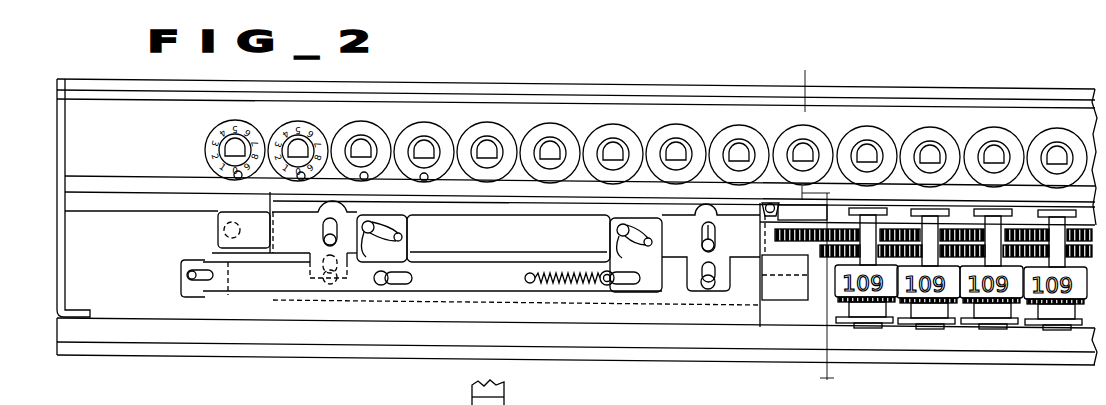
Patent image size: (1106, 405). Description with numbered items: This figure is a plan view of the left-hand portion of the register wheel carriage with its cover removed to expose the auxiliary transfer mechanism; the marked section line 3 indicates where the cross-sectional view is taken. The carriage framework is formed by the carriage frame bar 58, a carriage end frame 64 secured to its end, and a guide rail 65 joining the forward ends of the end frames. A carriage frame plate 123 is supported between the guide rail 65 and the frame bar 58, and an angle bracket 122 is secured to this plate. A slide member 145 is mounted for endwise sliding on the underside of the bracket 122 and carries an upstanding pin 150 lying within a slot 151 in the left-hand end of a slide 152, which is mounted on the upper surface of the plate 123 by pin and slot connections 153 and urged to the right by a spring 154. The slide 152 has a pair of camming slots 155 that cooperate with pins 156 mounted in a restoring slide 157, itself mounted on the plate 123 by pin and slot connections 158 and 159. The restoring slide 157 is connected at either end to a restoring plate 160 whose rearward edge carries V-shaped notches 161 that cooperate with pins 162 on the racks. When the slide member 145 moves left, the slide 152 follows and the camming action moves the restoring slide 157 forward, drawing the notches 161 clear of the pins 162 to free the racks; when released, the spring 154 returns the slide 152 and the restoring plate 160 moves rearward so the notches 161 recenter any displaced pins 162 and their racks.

The carriage frame bar 58 is at (116, 72).
The carriage end frame 64 is at (70, 150).
The guide rail 65 is at (327, 338).
The angle bracket 122 is at (771, 293).
The carriage frame plate 123 is at (555, 313).
The slide member 145 is at (192, 260).
The upstanding pin 150 is at (188, 275).
The slot 151 is at (198, 280).
The slide 152 is at (472, 291).
The pin and slot connections 153 is at (381, 285).
The spring 154 is at (585, 273).
The camming slots 155 is at (402, 237).
The pins 156 is at (507, 252).
The restoring slide 157 is at (504, 247).
The pin and slot connection 158 is at (325, 240).
The pin and slot connection 159 is at (714, 336).
The restoring plate 160 is at (794, 252).
The V-shaped notches 161 is at (773, 203).
The pins 162 is at (765, 216).
The section line 3- 3 is at (790, 74).